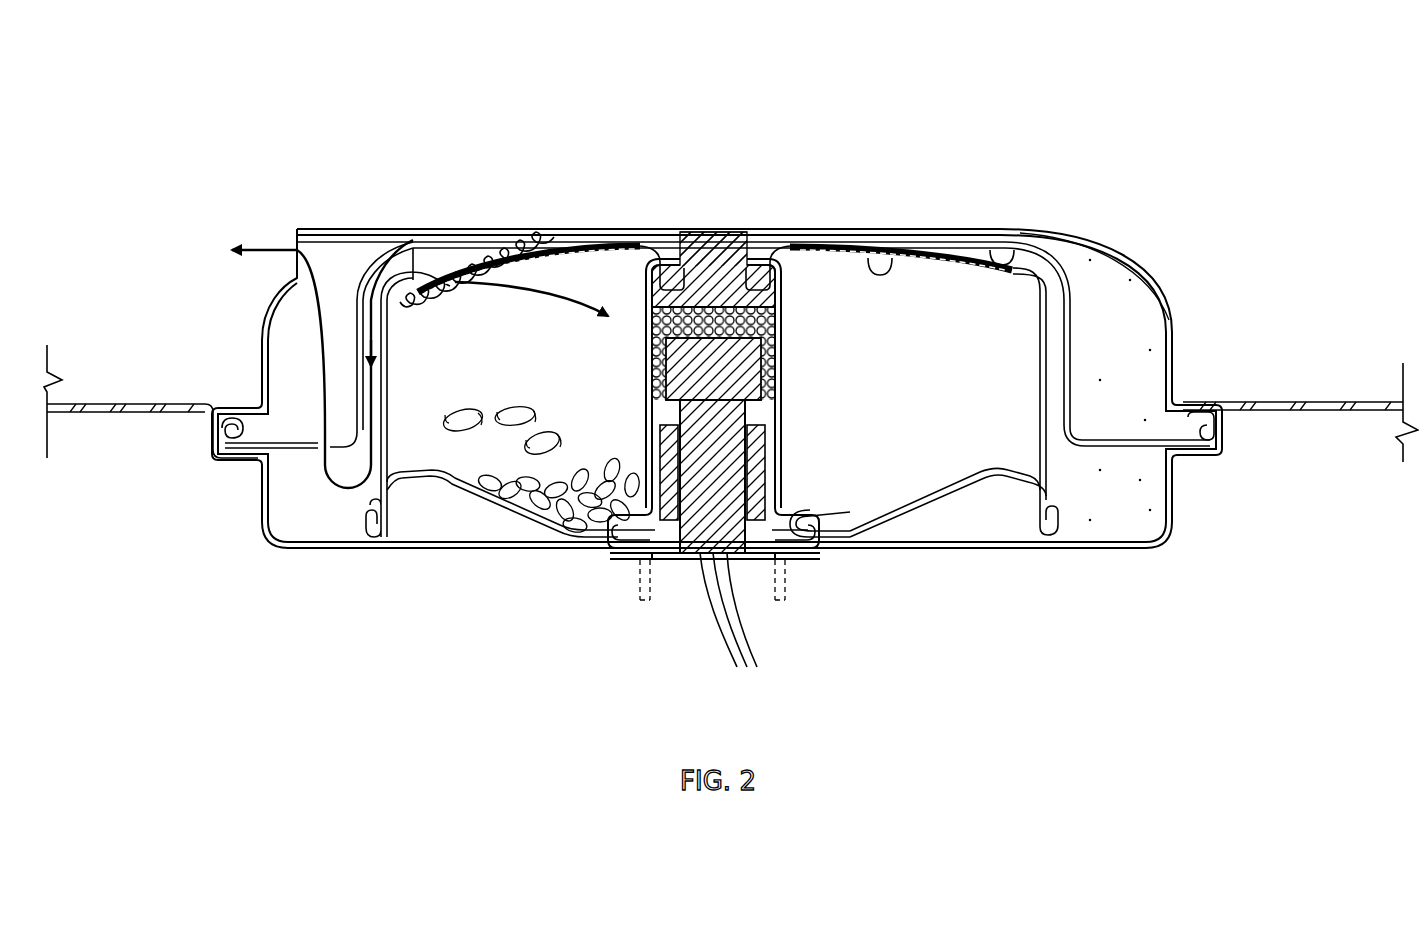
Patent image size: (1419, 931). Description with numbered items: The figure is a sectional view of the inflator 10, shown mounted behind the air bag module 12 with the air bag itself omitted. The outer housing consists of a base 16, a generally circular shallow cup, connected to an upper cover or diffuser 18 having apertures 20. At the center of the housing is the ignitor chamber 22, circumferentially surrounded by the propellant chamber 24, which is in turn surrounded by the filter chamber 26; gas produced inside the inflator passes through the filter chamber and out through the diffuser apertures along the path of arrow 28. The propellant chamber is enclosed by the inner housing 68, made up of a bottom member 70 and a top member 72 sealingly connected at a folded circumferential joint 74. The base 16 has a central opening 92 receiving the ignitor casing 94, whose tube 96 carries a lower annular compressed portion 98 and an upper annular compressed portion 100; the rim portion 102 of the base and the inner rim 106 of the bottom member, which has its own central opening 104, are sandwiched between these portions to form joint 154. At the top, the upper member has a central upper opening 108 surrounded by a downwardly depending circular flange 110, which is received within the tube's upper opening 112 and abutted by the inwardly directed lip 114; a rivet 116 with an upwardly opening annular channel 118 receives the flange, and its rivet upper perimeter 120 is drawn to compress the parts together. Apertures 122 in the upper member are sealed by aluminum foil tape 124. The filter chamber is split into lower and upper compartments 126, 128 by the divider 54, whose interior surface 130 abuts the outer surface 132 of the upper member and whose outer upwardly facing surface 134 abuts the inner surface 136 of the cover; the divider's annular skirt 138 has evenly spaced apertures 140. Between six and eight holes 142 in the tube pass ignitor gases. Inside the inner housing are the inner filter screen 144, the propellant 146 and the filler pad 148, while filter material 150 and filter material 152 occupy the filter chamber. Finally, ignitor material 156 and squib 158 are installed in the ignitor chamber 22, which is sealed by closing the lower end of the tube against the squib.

The inflator 10 is at (1125, 210).
The air bag module 12 is at (112, 415).
The base 16 is at (1173, 487).
The upper cover 18 is at (1173, 327).
The apertures 20 is at (310, 247).
The ignitor chamber 22 is at (693, 553).
The propellant chamber 24 is at (924, 386).
The filter chamber 26 is at (1092, 532).
The arrow 28 is at (253, 253).
The divider 54 is at (1074, 392).
The inner housing 68 is at (1038, 310).
The bottom member 70 is at (962, 480).
The top member 72 is at (1038, 400).
The joint 74 is at (378, 543).
The central opening 92 is at (795, 622).
The ignitor casing 94 is at (778, 394).
The tube 96 is at (778, 323).
The lower annular compressed portion 98 is at (810, 560).
The upper annular compressed portion 100 is at (805, 518).
The rim portion 102 is at (628, 543).
The central opening 104 is at (730, 550).
The inner rim 106 is at (607, 547).
The central upper opening 108 is at (713, 229).
The circular flange 110 is at (683, 237).
The upper opening 112 is at (707, 250).
The lip 114 is at (780, 285).
The rivet 116 is at (733, 238).
The annular channel 118 is at (680, 282).
The rivet upper perimeter 120 is at (793, 240).
The apertures 122 is at (436, 255).
The aluminum foil tape 124 is at (497, 250).
The lower compartment 126 is at (1128, 504).
The upper compartment 128 is at (1128, 336).
The interior surface 130 is at (907, 257).
The outer surface 132 is at (557, 240).
The outer upwardly facing surface 134 is at (978, 237).
The inner surface 136 is at (1023, 240).
The annular skirt 138 is at (293, 450).
The apertures 140 is at (317, 437).
The holes 142 is at (648, 356).
The inner filter screen 144 is at (440, 285).
The propellant 146 is at (457, 423).
The filler pad 148 is at (613, 478).
The filter material 150 is at (1143, 302).
The filter material 152 is at (1155, 538).
The joint 154 is at (800, 552).
The ignitor material 156 is at (773, 348).
The squib 158 is at (680, 408).